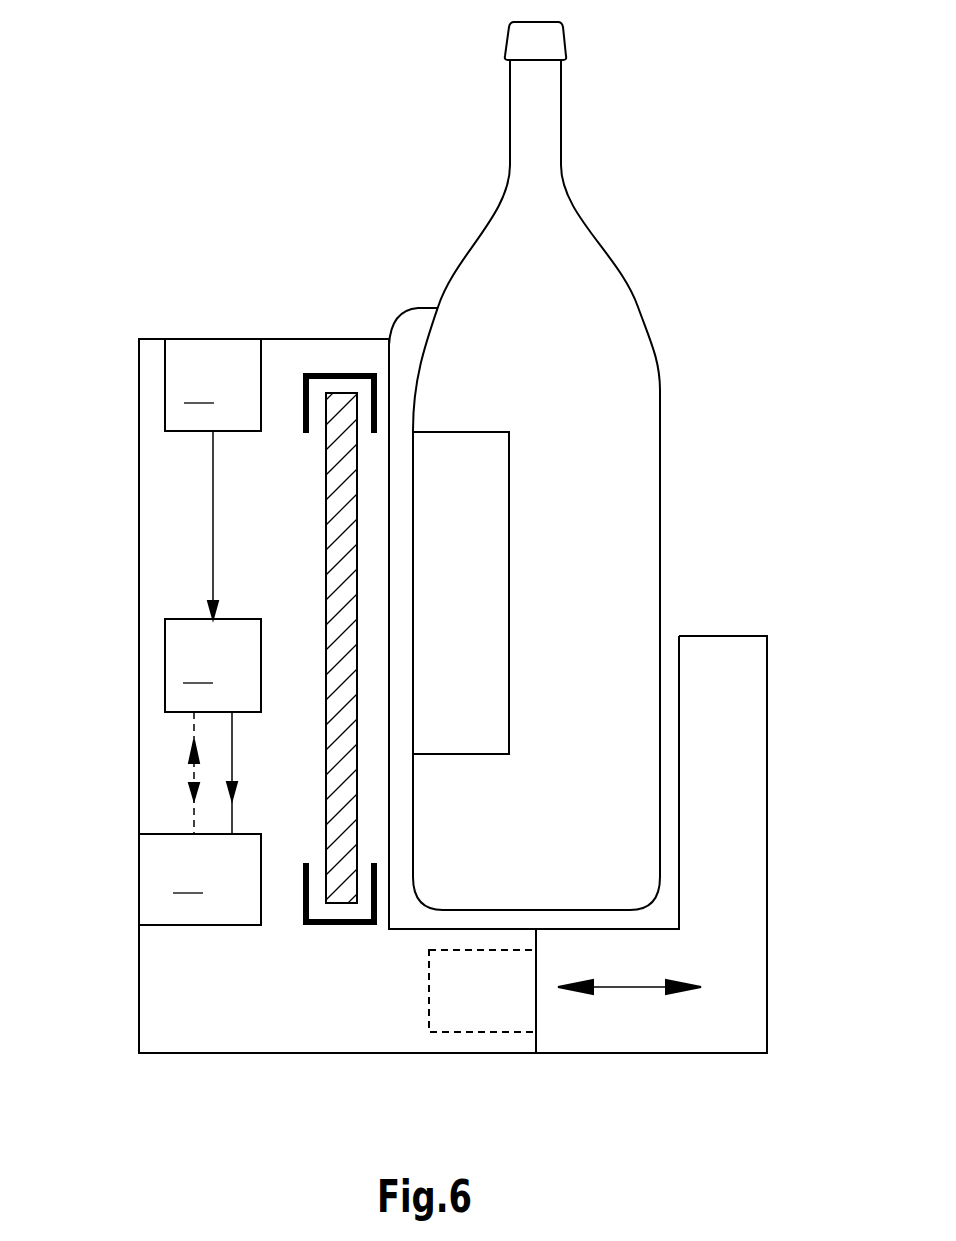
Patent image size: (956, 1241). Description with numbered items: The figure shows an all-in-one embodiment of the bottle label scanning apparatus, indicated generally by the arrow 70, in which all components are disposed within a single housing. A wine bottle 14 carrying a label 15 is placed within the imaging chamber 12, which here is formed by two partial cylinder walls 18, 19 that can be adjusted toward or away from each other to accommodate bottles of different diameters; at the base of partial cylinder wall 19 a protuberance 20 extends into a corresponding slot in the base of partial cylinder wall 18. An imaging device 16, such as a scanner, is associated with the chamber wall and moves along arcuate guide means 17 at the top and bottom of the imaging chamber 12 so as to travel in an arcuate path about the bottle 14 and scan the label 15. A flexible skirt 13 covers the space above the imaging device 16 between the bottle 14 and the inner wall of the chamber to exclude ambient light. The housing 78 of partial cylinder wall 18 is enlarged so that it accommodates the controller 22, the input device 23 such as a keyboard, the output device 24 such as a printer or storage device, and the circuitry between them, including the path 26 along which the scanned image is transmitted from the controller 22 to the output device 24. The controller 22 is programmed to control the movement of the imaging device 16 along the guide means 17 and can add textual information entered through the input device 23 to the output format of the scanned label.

The imaging chamber 12 is at (138, 762).
The flexible skirt 13 is at (412, 310).
The wine bottle 14 is at (575, 312).
The label 15 is at (440, 604).
The imaging device 16 is at (278, 529).
The arcuate guide means 17 is at (332, 372).
The partial cylinder wall 18 is at (355, 352).
The partial cylinder wall 19 is at (730, 725).
The protuberance 20 is at (480, 1000).
The controller 22 is at (213, 665).
The input device 23 is at (213, 385).
The output device 24 is at (200, 879).
The path 26 is at (192, 816).
The device 70 is at (177, 263).
The housing 78 is at (153, 388).